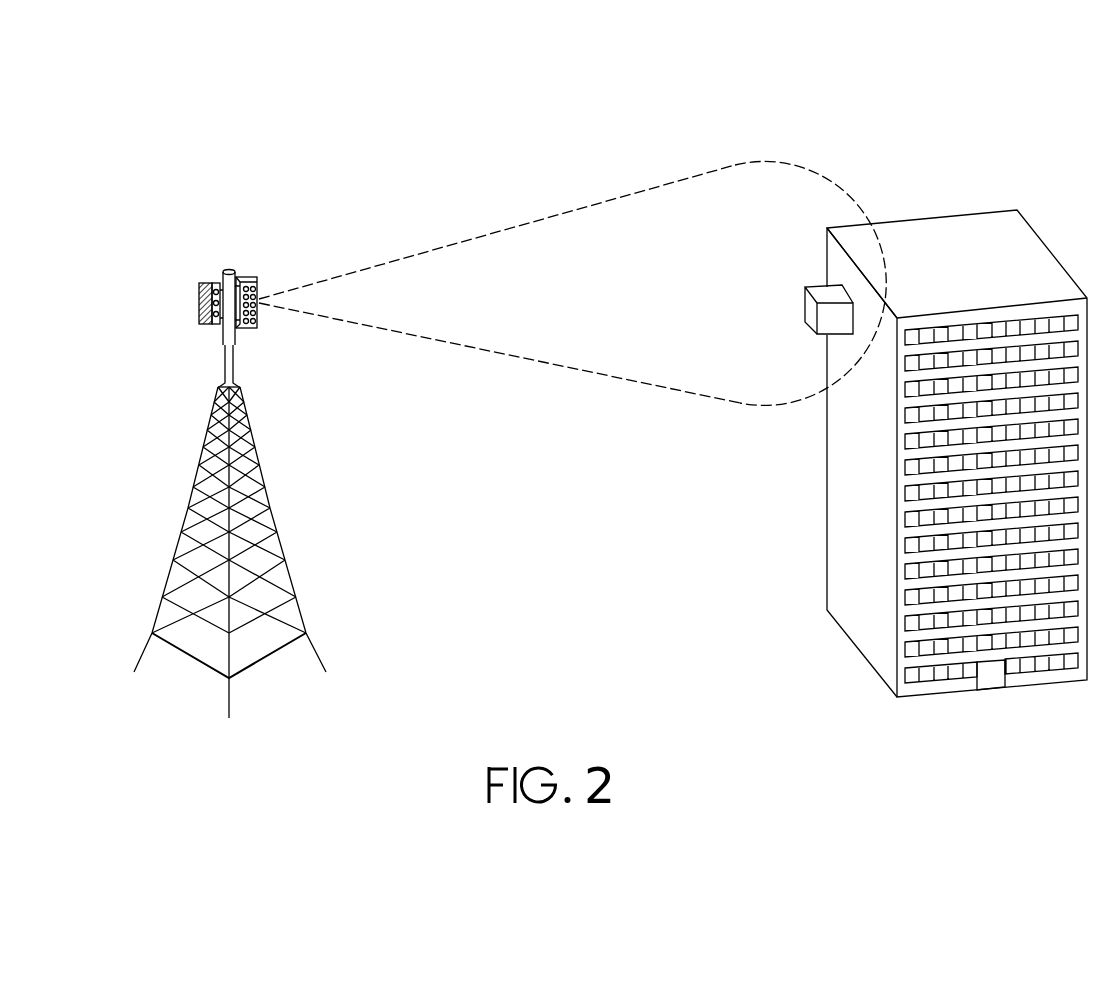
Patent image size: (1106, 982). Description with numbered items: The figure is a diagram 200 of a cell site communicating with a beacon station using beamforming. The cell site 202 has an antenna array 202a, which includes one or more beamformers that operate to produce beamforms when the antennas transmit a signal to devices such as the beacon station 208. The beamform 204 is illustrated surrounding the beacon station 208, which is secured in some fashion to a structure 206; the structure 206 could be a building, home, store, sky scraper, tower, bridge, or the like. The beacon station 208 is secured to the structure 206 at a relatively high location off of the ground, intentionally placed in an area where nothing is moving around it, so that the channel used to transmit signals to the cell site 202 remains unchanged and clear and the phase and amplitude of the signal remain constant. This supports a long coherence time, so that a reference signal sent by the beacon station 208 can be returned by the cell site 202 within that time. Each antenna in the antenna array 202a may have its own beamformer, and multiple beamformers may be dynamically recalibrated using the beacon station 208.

The diagram 200 is at (106, 100).
The cell site 202 is at (215, 498).
The antenna array 202a is at (200, 301).
The beamform 204 is at (690, 178).
The structure 206 is at (1028, 253).
The beacon station 208 is at (822, 296).